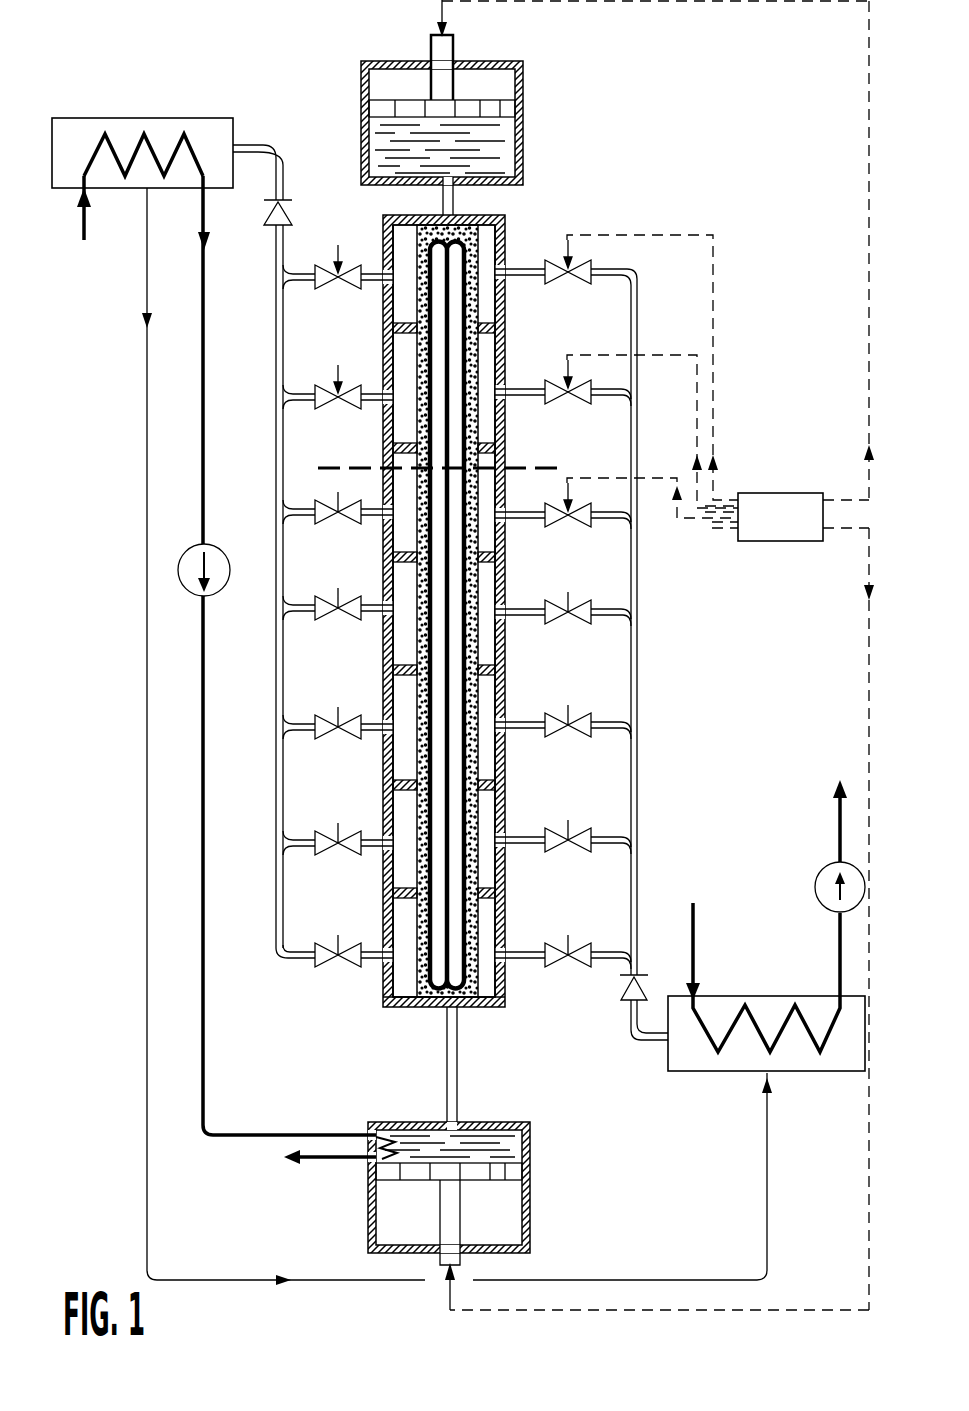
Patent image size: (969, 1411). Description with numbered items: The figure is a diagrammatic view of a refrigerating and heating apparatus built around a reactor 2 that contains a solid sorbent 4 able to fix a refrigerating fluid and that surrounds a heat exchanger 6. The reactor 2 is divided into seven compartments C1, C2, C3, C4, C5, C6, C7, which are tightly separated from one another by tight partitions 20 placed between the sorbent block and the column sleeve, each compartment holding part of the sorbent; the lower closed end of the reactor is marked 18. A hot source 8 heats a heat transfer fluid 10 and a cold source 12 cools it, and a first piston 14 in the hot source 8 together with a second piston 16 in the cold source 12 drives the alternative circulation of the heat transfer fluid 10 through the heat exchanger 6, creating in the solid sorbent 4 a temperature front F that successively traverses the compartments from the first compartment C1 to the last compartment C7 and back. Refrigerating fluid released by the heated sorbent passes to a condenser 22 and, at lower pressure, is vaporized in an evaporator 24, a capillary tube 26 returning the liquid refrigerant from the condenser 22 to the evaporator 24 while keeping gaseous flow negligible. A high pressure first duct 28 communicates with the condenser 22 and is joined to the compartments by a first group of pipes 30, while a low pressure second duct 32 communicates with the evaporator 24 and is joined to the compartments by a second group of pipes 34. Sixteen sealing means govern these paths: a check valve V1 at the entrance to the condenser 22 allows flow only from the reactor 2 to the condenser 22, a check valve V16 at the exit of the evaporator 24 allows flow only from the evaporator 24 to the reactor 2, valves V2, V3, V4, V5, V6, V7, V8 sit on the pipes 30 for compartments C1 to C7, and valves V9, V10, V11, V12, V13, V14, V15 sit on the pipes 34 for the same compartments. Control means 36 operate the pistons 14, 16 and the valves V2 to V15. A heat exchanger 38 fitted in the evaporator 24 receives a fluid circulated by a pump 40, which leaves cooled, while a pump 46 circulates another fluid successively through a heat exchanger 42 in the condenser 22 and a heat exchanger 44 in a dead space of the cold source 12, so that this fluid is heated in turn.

The reactor 2 is at (518, 212).
The solid sorbent 4 is at (393, 235).
The heat exchanger 6 is at (472, 985).
The hot source 8 is at (505, 63).
The heat transfer fluid 10 is at (490, 145).
The cold source 12 is at (532, 1150).
The first piston 14 is at (400, 103).
The second piston 16 is at (490, 1172).
The column bottom 18 is at (386, 980).
The tight partitions 20 is at (404, 330).
The condenser 22 is at (90, 118).
The evaporator 24 is at (862, 1072).
The capillary tube 26 is at (147, 432).
The first duct 28 is at (276, 470).
The first group of pipes 30 is at (302, 296).
The second duct 32 is at (640, 588).
The second group of pipes 34 is at (620, 292).
The control means 36 is at (800, 493).
The heat exchanger 38 is at (780, 1003).
The pump 40 is at (818, 882).
The heat exchanger 42 is at (152, 140).
The heat exchanger 44 is at (393, 1135).
The pump 46 is at (182, 582).
The check valve V1 is at (288, 210).
The valve V2 is at (318, 965).
The valve V3 is at (318, 842).
The valve V4 is at (322, 740).
The valve V5 is at (322, 616).
The valve V6 is at (352, 522).
The valve V7 is at (320, 412).
The valve V8 is at (316, 275).
The valve V9 is at (636, 927).
The valve V10 is at (598, 830).
The valve V11 is at (592, 716).
The valve V12 is at (592, 625).
The valve V13 is at (590, 522).
The valve V14 is at (590, 400).
The valve V15 is at (590, 265).
The check valve V16 is at (630, 1040).
The first compartment C1 is at (508, 960).
The compartment C2 is at (500, 885).
The compartment C3 is at (500, 770).
The compartment C4 is at (500, 655).
The compartment C5 is at (497, 548).
The compartment C6 is at (497, 347).
The last compartment C7 is at (497, 255).
The temperature front F is at (525, 462).